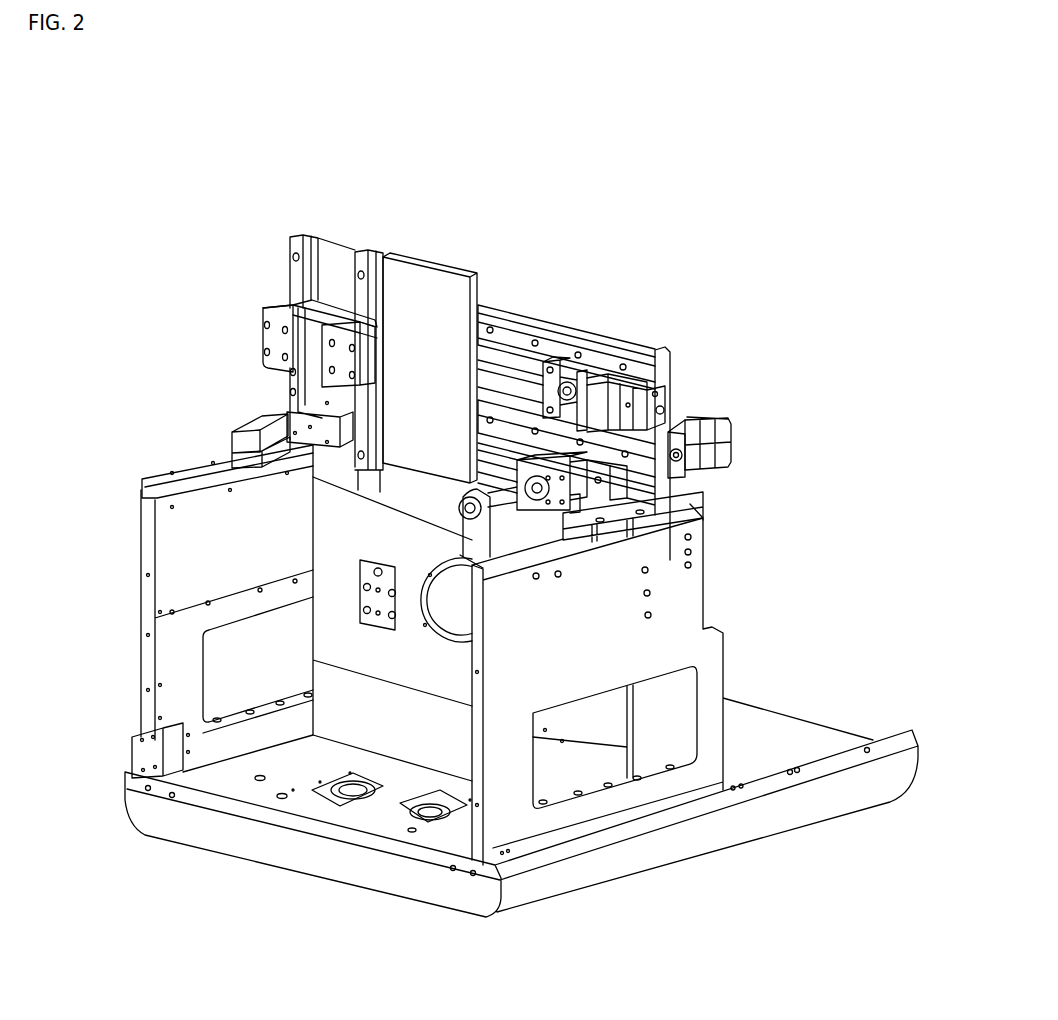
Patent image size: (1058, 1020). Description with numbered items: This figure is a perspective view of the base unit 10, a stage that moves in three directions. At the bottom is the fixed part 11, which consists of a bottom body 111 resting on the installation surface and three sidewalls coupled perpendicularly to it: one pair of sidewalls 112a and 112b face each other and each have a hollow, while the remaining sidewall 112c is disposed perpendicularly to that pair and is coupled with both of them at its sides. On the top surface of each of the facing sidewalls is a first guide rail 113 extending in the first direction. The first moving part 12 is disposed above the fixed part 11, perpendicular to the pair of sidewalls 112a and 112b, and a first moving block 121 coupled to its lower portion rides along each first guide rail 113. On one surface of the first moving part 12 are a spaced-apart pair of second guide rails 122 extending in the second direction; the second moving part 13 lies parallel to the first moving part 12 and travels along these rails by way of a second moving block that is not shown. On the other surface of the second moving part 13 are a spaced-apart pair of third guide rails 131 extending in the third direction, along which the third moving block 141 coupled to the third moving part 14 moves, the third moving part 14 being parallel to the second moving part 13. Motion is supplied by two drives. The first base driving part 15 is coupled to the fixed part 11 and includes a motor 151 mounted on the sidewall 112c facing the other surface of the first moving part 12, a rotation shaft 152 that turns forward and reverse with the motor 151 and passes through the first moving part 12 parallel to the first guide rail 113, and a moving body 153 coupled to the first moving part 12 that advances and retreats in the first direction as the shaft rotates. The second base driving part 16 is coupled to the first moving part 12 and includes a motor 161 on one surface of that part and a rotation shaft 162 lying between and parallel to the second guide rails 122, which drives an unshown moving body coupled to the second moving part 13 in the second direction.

The base unit 10 is at (637, 204).
The fixed part 11 is at (609, 931).
The bottom body 111 is at (352, 845).
The sidewall 112a is at (690, 587).
The sidewall 112b is at (148, 537).
The sidewall 112c is at (615, 767).
The first guide rail 113 is at (157, 477).
The first moving part 12 is at (670, 363).
The first moving block 121 is at (235, 430).
The second guide rails 122 is at (637, 440).
The second moving part 13 is at (445, 265).
The third guide rails 131 is at (365, 250).
The third moving part 14 is at (263, 323).
The third moving block 141 is at (290, 305).
The first base driving part 15 is at (735, 418).
The motor 151 is at (723, 446).
The rotation shaft 152 is at (583, 490).
The moving body 153 is at (672, 511).
The second base driving part 16 is at (677, 392).
The motor 161 is at (663, 407).
The rotation shaft 162 is at (515, 375).